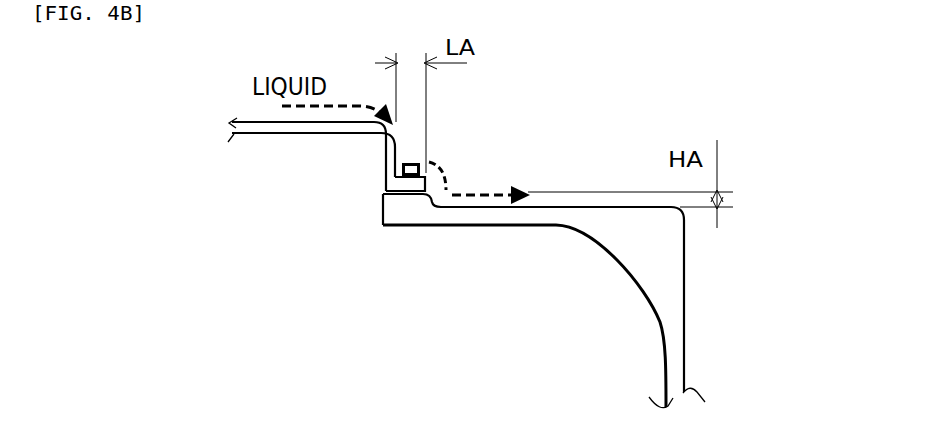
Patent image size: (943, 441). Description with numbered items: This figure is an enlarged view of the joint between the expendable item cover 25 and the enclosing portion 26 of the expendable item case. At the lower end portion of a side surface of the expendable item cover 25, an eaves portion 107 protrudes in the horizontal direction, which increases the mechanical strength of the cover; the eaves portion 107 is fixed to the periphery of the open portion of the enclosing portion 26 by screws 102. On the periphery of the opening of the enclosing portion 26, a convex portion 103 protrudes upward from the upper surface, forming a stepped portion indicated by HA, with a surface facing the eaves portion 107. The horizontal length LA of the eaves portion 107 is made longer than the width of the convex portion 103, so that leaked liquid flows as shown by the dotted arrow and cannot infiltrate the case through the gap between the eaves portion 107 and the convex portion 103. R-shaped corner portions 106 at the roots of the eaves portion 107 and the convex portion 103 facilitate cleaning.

The expendable item cover 25 is at (250, 121).
The enclosing portion 26 is at (688, 293).
The screws 102 is at (415, 162).
The convex portion 103 is at (383, 224).
The corner portion 106 is at (388, 180).
The eaves portion 107 is at (426, 182).